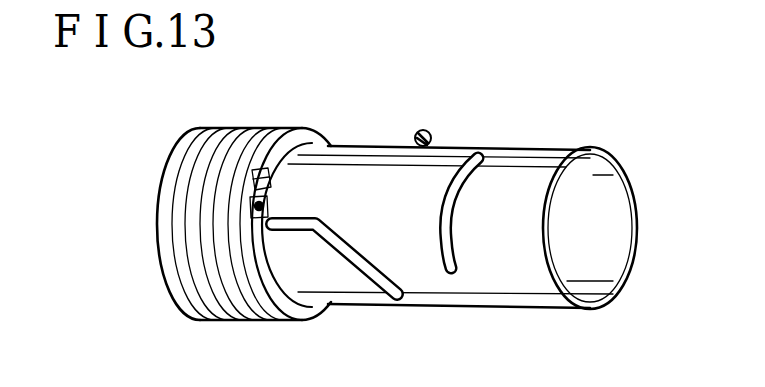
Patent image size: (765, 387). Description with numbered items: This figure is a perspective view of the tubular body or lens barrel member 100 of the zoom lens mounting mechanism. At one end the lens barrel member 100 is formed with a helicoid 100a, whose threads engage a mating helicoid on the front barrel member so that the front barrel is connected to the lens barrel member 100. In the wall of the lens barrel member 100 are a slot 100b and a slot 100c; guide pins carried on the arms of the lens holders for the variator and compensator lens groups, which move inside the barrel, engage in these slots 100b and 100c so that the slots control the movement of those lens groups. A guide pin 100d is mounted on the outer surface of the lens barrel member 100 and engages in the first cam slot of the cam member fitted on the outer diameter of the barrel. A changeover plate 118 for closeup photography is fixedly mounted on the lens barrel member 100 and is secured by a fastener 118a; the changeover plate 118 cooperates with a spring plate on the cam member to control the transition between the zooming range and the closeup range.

The lens barrel member 100 is at (518, 182).
The helicoid 100a is at (218, 319).
The slot 100b is at (392, 303).
The slot 100c is at (452, 275).
The guide pin 100d is at (432, 128).
The changeover plate 118 is at (287, 128).
The clamp screw 118a is at (270, 204).